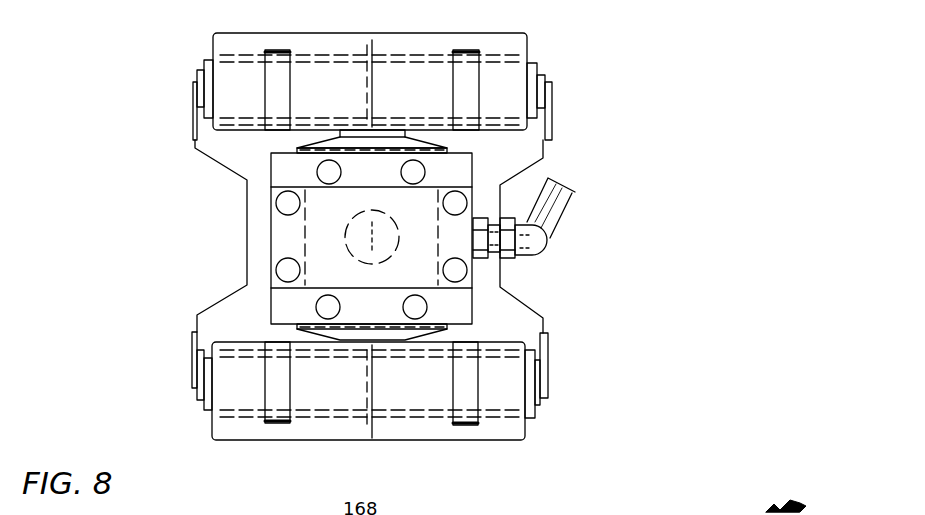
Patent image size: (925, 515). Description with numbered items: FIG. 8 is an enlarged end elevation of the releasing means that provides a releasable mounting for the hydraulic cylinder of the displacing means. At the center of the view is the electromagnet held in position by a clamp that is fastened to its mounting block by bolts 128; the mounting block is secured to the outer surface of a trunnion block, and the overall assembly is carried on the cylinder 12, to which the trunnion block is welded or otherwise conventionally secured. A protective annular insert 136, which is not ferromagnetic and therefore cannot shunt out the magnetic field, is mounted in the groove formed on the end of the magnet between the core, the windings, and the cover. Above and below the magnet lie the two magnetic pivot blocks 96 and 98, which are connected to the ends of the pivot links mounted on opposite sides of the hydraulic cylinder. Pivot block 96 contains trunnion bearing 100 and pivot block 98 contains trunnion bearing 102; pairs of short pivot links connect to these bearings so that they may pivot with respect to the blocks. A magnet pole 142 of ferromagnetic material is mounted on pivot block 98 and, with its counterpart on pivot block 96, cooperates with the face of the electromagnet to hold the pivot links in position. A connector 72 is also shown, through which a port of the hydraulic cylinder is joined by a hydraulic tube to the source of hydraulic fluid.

The magnetic pivot block 98 is at (527, 45).
The magnetic pivot block 96 is at (527, 438).
The trunnion bearing 102 is at (553, 93).
The trunnion bearing 100 is at (548, 380).
The magnet pole 142 is at (455, 149).
The protective annular insert 136 is at (455, 330).
The cylinder 12 is at (433, 226).
The bolts 128 is at (288, 270).
The connector 72 is at (540, 253).